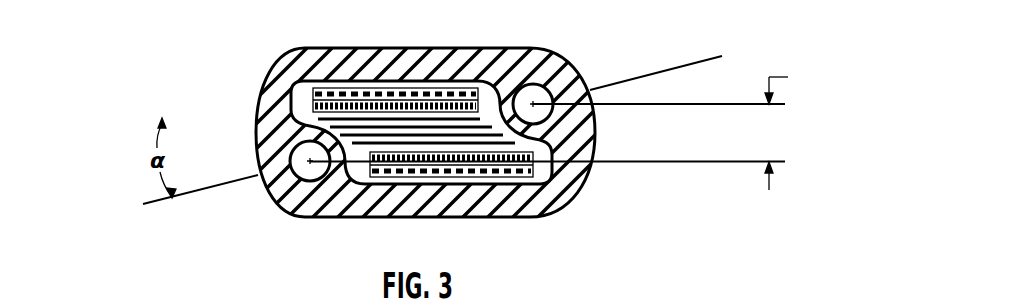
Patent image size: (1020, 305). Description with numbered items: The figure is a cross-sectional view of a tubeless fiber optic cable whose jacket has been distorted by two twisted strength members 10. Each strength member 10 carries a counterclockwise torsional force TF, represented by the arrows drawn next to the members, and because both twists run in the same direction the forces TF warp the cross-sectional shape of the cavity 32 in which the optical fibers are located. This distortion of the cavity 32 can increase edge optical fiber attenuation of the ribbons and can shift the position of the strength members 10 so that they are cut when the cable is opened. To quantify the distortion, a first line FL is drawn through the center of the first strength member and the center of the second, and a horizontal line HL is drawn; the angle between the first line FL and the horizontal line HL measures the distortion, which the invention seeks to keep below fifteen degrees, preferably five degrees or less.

The strength member 10 is at (553, 99).
The cavity 32 is at (542, 172).
The torsional force TF is at (528, 75).
The horizontal line HL is at (253, 122).
The first line FL is at (431, 133).
The vertical spacing between fibers A is at (784, 126).